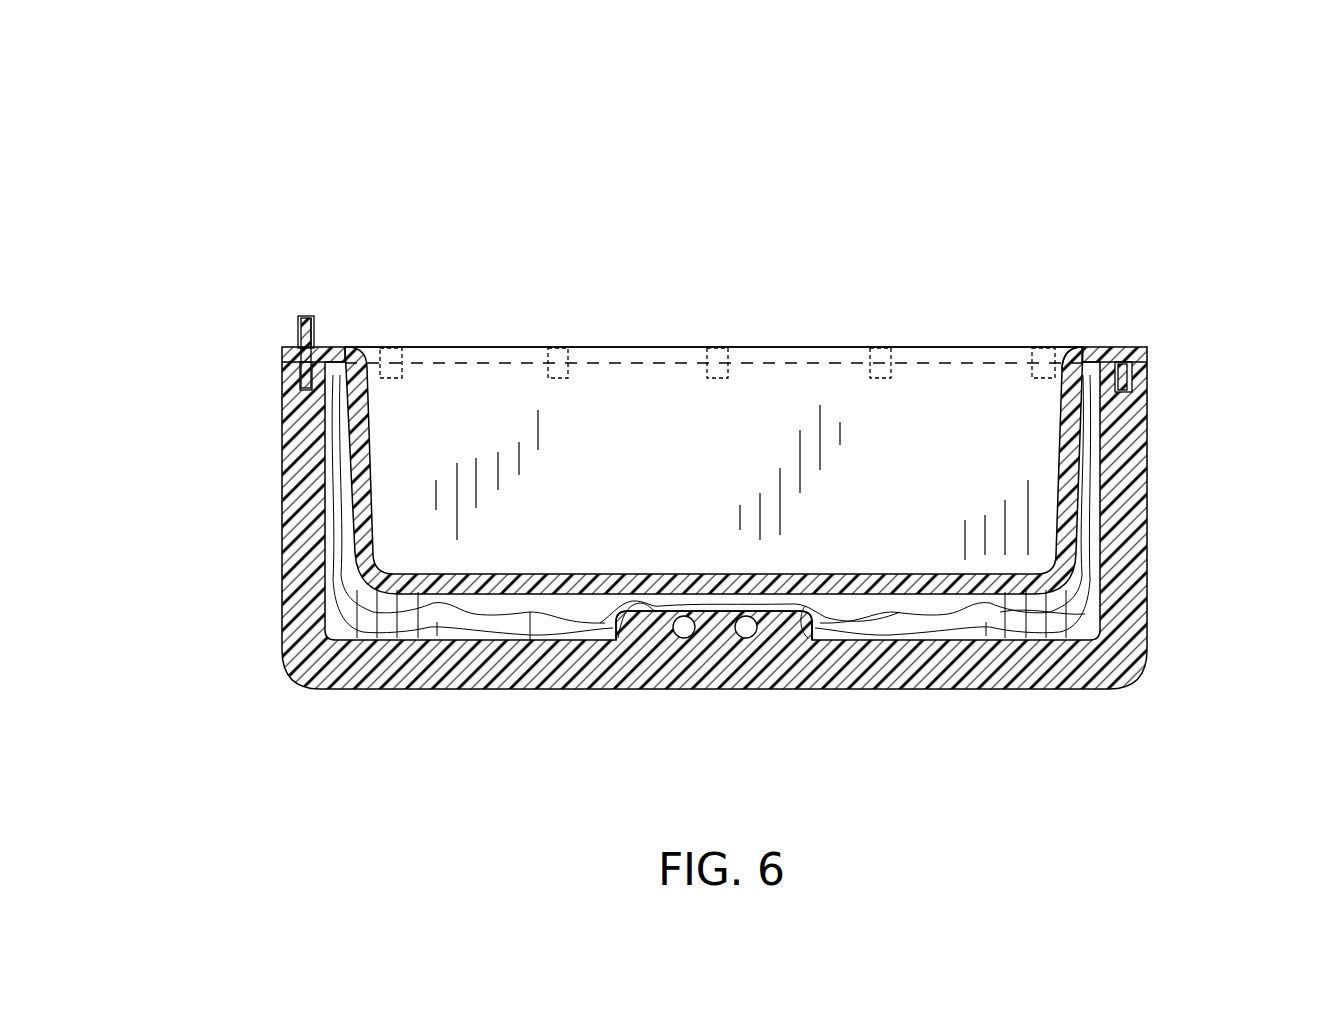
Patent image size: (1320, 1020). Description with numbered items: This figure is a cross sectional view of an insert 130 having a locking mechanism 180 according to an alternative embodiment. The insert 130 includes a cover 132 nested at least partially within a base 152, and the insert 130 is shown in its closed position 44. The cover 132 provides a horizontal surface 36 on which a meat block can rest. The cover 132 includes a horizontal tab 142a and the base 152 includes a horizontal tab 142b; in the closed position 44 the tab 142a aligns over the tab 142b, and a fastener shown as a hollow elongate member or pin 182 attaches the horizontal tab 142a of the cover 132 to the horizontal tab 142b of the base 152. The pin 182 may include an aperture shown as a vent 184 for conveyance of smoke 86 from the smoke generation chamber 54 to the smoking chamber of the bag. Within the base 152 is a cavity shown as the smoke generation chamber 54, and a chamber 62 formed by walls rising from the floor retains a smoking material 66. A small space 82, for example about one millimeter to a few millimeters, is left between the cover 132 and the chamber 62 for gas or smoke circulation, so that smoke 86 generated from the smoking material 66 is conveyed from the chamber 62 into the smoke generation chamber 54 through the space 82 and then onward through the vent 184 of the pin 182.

The insert 130 is at (711, 443).
The closed position 44 is at (1196, 198).
The locking mechanism 180 is at (315, 308).
The pin 182 is at (203, 488).
The horizontal tab 142a is at (318, 330).
The horizontal tab 142b is at (282, 370).
The vent 184 is at (561, 347).
The cover 132 is at (1070, 338).
The horizontal surface 36 is at (714, 470).
The smoke 86 is at (778, 559).
The small space 82 is at (845, 611).
The chamber 62 is at (714, 672).
The smoking material 66 is at (751, 682).
The smoke generation chamber 54 is at (1035, 615).
The base 152 is at (1143, 710).